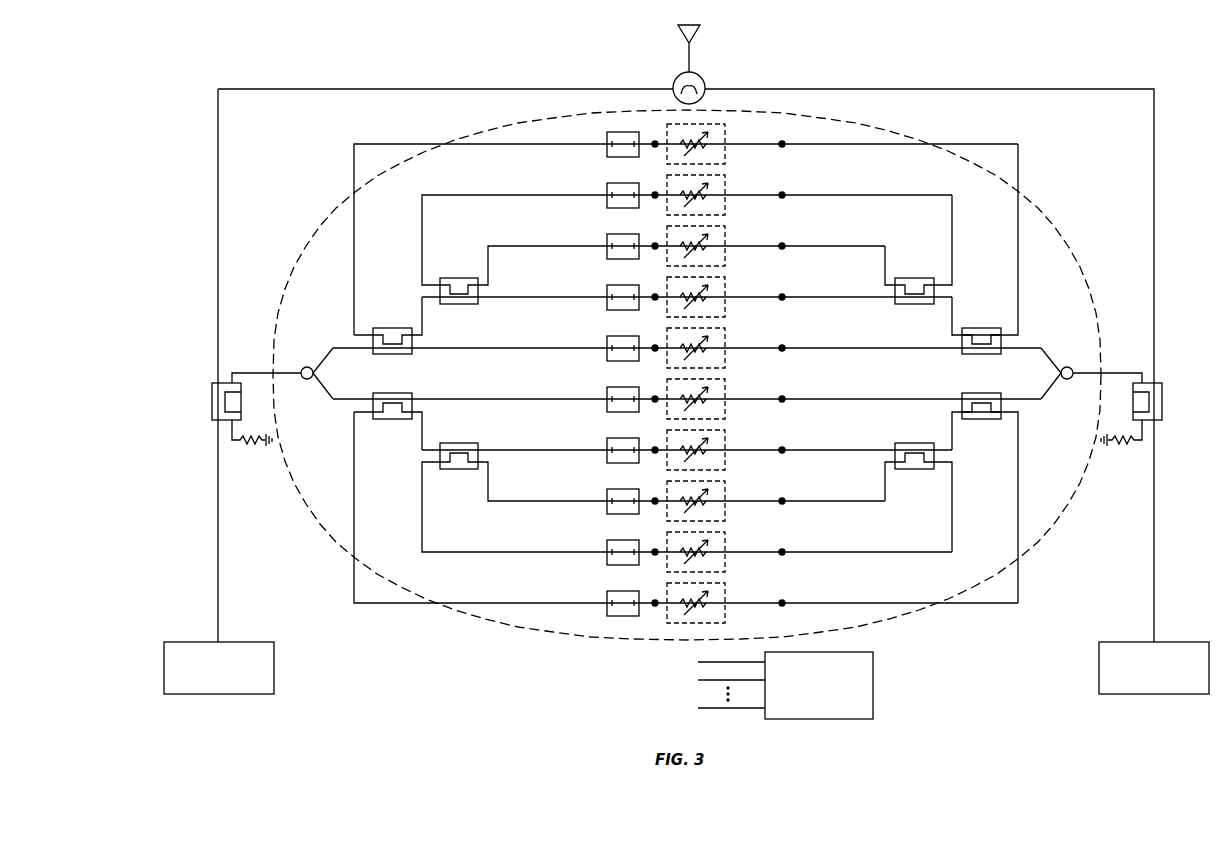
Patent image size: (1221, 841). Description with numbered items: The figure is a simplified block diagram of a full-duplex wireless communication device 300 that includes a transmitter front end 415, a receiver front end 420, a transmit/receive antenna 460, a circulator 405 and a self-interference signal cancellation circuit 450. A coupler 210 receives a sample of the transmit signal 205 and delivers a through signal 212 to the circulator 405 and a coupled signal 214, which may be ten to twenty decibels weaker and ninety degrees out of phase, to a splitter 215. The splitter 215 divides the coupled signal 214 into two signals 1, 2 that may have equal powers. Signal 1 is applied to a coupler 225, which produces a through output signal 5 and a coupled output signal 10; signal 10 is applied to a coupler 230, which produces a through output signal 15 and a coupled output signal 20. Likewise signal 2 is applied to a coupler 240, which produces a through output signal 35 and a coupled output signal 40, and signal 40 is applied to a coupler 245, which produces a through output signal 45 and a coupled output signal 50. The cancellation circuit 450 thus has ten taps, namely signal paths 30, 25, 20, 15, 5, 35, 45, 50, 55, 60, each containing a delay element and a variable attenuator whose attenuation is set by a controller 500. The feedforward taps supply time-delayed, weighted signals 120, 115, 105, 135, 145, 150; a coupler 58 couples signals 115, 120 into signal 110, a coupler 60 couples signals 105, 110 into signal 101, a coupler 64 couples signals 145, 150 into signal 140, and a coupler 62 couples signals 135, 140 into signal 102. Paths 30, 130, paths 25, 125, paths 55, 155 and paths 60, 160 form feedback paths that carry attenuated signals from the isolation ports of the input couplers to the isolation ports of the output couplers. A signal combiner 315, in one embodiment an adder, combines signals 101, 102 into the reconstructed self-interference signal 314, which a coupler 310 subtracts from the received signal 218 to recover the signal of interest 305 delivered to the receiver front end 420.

The full-duplex wireless communication device 300 is at (220, 24).
The through signal 212 is at (310, 89).
The received signal 218 is at (1068, 89).
The transmit/receive antenna 460 is at (678, 32).
The circulator 405 is at (702, 76).
The self-interference signal cancellation circuit 450 is at (888, 128).
The signal path 30 is at (500, 145).
The path 130 is at (872, 146).
The signal path / coupler 60 is at (485, 603).
The path 160 is at (890, 603).
The signal path 25 is at (540, 196).
The path 125 is at (833, 196).
The signal path 55 is at (540, 552).
The path 155 is at (840, 552).
The coupled output signal 20 is at (488, 265).
The signal 120 is at (885, 265).
The coupled output signal 50 is at (488, 485).
The signal 150 is at (885, 485).
The through output signal 15 is at (492, 298).
The signal 115 is at (885, 298).
The coupled output signal 10 is at (422, 315).
The signal 110 is at (952, 315).
The through output signal 45 is at (492, 449).
The signal 145 is at (885, 449).
The coupled output signal 40 is at (422, 433).
The signal 140 is at (952, 433).
The through output signal 5 is at (425, 350).
The signal 105 is at (948, 352).
The through output signal 35 is at (425, 398).
The signal 135 is at (948, 398).
The signal 1 is at (343, 357).
The signal 2 is at (343, 388).
The signal 101 is at (1032, 353).
The signal 102 is at (1032, 393).
The coupler 225 is at (393, 328).
The coupler 230 is at (458, 278).
The coupler 240 is at (393, 419).
The coupler 245 is at (458, 469).
The coupler 58 is at (915, 278).
The coupler 62 is at (990, 419).
The coupler 64 is at (915, 469).
The splitter 215 is at (307, 367).
The signal combiner 315 is at (1071, 367).
The coupled signal 214 is at (268, 372).
The reconstructed self-interference signal 314 is at (1112, 372).
The coupler 210 is at (212, 396).
The coupler 310 is at (1161, 396).
The transmit signal 205 is at (218, 522).
The signal of interest 305 is at (1154, 522).
The transmitter front end 415 is at (274, 668).
The receiver front end 420 is at (1099, 668).
The controller 500 is at (873, 686).